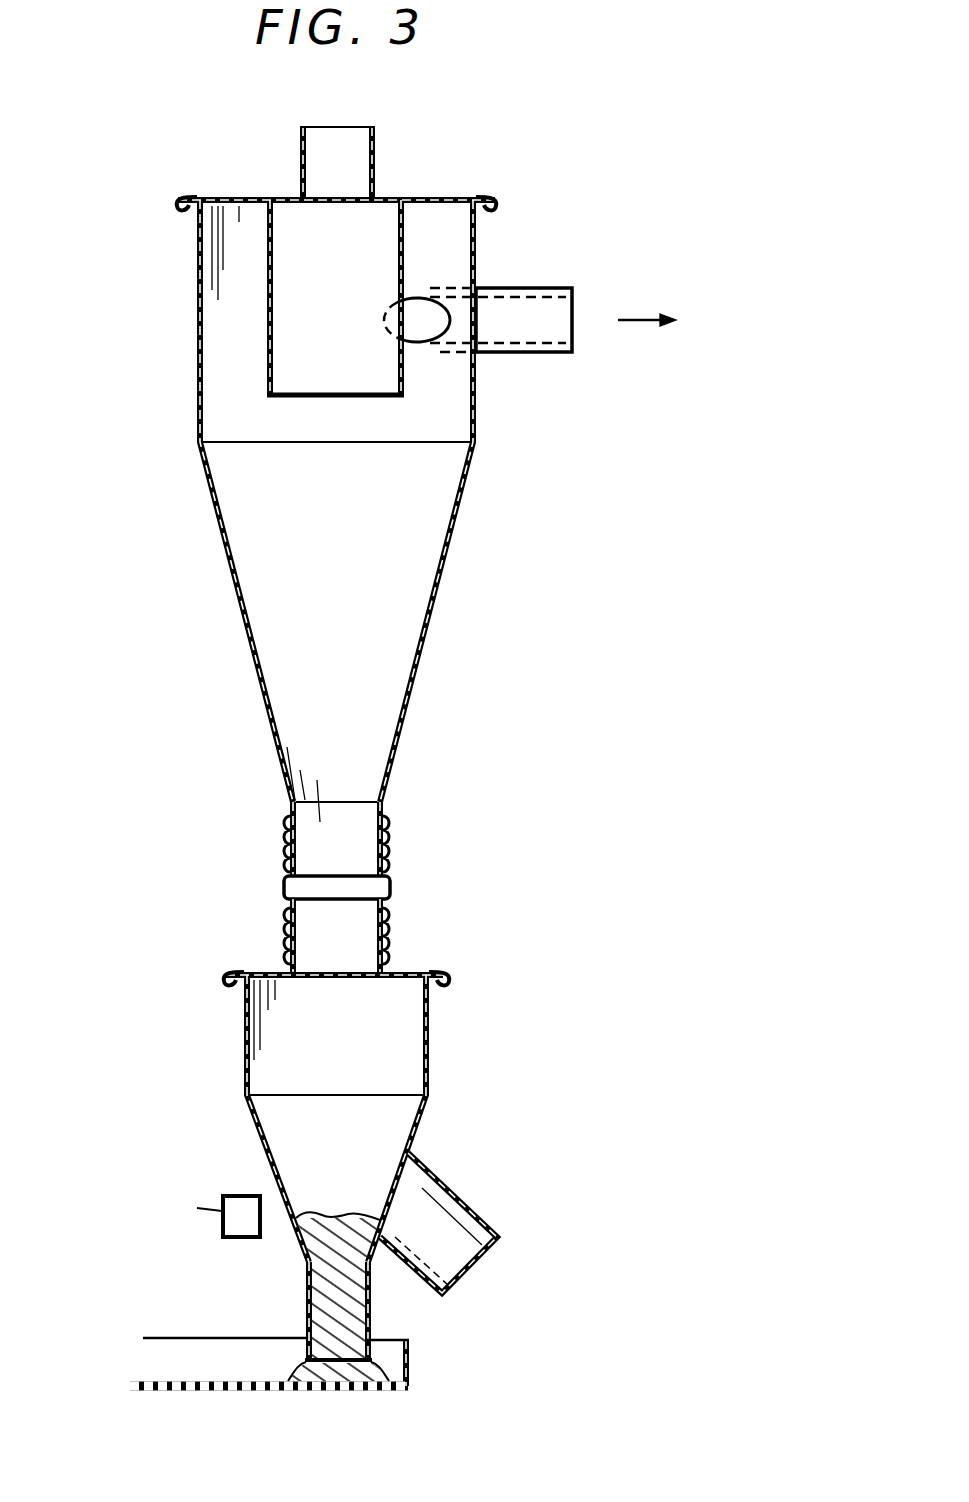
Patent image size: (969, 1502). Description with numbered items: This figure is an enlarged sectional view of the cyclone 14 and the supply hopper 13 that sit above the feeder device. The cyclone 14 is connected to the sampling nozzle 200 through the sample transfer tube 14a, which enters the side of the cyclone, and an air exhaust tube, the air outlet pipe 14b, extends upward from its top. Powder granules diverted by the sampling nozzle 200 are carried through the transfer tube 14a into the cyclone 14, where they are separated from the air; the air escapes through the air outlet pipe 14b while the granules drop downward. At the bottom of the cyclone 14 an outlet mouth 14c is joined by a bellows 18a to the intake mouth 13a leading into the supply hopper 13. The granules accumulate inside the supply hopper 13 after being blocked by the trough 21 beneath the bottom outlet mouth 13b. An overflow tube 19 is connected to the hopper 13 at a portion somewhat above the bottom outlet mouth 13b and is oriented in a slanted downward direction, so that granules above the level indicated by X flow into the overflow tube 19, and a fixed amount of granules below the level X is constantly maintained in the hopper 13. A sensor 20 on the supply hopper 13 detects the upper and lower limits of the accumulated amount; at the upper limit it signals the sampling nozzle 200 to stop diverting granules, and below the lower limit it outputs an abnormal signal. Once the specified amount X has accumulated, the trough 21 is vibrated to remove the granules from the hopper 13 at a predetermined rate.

The cyclone 14 is at (440, 598).
The sample transfer tube 14a is at (543, 312).
The air outlet pipe 14b is at (337, 140).
The outlet mouth 14c is at (350, 830).
The bellows 18a is at (385, 886).
The intake mouth 13a is at (362, 936).
The supply hopper 13 is at (431, 1034).
The bottom outlet mouth 13b is at (353, 1313).
The overflow tube 19 is at (463, 1205).
The sensor 20 is at (240, 1238).
The trough 21 is at (165, 1362).
The sampling nozzle 200 is at (682, 323).
The level of powder granules X is at (313, 1214).